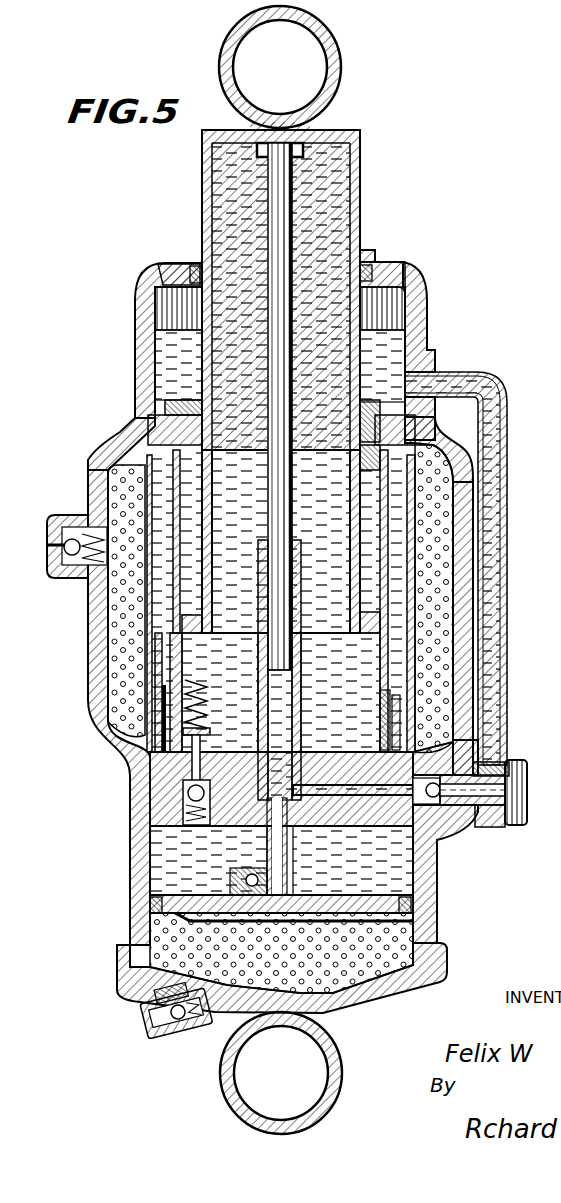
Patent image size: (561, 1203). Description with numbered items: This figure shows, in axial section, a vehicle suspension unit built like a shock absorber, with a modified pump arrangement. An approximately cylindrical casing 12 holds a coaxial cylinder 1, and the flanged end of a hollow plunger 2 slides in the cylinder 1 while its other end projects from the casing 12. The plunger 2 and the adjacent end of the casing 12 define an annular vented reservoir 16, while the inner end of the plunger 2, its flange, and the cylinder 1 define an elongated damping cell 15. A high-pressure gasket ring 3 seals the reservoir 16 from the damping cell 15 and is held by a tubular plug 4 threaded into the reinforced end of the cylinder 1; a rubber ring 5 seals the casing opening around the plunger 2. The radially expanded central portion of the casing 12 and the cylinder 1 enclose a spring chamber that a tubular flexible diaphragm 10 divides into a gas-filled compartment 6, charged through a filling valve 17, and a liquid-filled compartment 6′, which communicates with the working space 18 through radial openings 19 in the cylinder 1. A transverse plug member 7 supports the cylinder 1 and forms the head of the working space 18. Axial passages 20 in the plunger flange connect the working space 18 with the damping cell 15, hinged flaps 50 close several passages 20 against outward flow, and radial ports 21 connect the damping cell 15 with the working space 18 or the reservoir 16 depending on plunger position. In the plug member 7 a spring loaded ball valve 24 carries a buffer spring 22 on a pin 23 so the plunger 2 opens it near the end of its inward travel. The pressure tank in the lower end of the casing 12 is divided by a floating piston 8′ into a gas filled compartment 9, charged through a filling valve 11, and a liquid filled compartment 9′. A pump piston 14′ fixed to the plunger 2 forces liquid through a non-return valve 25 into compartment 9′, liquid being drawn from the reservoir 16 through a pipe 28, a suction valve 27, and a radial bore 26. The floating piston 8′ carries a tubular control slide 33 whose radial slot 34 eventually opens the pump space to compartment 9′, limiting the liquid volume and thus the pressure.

The cylinder 1 is at (167, 648).
The hollow plunger 2 is at (360, 185).
The high-pressure gasket ring 3 is at (357, 450).
The tubular plug 4 is at (175, 405).
The rubber ring 5 is at (185, 266).
The gas-filled compartment 6 is at (440, 605).
The liquid-filled compartment 6′ is at (100, 600).
The plug member 7 is at (140, 805).
The floating piston 8′ is at (150, 905).
The gas filled compartment 9 is at (440, 945).
The liquid filled compartment 9′ is at (437, 880).
The flexible diaphragm 10 is at (103, 457).
The filling valve 11 is at (160, 1025).
The casing 12 is at (135, 296).
The piston 14′ is at (268, 183).
The damping cell 15 is at (177, 505).
The vented reservoir 16 is at (400, 300).
The filling valve 17 is at (47, 540).
The working space 18 is at (400, 340).
The radial openings 19 is at (385, 705).
The axial passages 20 is at (195, 618).
The radial ports 21 is at (213, 500).
The buffer spring 22 is at (205, 700).
The pin 23 is at (203, 762).
The spring loaded ball valve 24 is at (188, 790).
The non-return valve 25 is at (250, 872).
The radial bore 26 is at (382, 872).
The suction valve 27 is at (448, 805).
The pipe 28 is at (507, 480).
The tubular control slide 33 is at (290, 920).
The slot 34 is at (290, 800).
The hinged flaps 50 is at (365, 615).